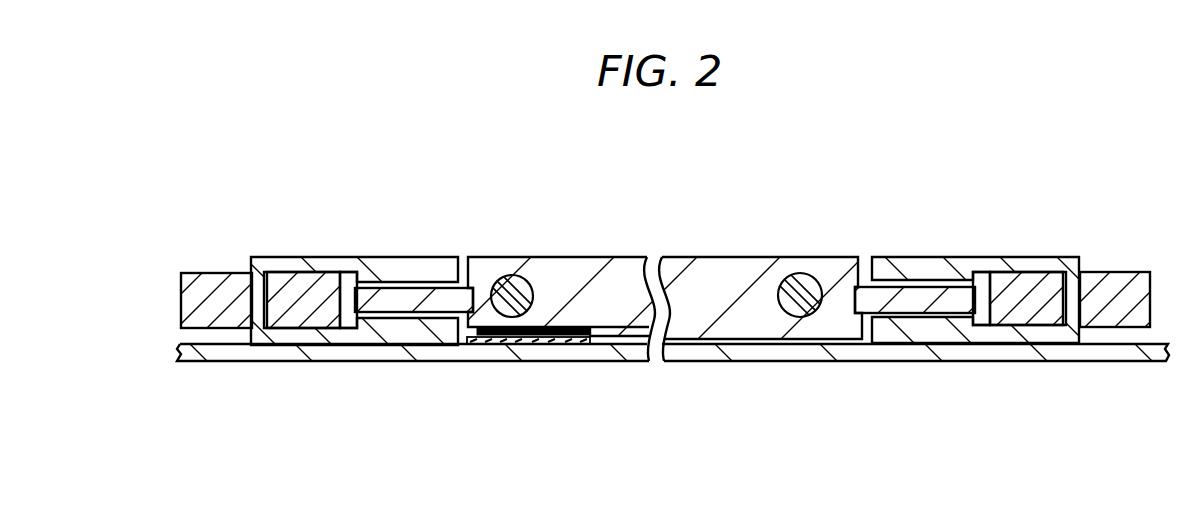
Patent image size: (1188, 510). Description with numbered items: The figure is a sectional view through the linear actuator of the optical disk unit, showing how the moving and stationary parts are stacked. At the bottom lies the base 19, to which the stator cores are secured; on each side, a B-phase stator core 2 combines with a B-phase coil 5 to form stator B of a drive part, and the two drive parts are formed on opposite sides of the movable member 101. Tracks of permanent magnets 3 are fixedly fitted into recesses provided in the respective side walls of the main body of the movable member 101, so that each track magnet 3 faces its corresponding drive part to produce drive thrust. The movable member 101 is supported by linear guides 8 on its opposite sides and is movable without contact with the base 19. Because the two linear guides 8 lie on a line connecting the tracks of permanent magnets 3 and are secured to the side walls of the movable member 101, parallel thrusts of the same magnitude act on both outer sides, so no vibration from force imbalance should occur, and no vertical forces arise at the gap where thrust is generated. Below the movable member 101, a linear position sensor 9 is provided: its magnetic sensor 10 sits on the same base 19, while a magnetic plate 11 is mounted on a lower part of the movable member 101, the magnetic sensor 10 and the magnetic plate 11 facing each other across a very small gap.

The B-phase stator core 2 is at (275, 263).
The permanent magnet 3 is at (383, 298).
The B-phase coil 5 is at (207, 313).
The linear guide 8 is at (527, 293).
The linear position sensor 9 is at (541, 388).
The magnetic sensor 10 is at (504, 337).
The magnetic plate 11 is at (578, 345).
The base 19 is at (383, 350).
The movable member 101 is at (547, 268).